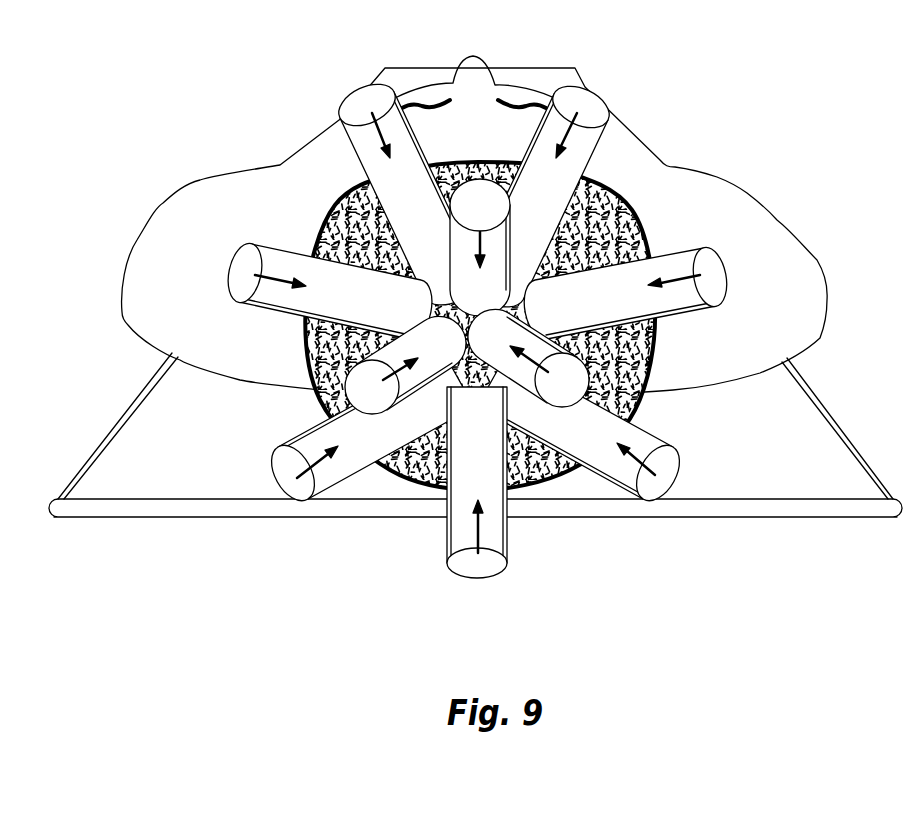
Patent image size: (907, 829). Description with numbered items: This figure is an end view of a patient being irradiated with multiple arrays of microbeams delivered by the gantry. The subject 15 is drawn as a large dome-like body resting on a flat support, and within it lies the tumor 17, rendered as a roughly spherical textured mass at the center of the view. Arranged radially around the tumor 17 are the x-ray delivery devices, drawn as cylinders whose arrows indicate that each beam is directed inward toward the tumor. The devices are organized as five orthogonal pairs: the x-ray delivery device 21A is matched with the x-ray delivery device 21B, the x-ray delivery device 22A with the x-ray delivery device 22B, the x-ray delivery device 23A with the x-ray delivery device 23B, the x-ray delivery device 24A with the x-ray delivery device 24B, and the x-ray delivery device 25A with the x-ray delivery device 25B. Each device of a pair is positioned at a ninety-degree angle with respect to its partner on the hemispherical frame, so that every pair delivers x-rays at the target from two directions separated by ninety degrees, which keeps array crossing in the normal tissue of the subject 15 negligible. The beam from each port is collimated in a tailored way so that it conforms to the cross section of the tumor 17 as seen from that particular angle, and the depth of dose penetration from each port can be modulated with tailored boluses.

The subject 15 is at (660, 156).
The tumor 17 is at (655, 357).
The x-ray delivery device 21A is at (711, 270).
The x-ray delivery device 21B is at (405, 341).
The x-ray delivery device 22A is at (545, 338).
The x-ray delivery device 22B is at (236, 272).
The x-ray delivery device 23A is at (481, 197).
The x-ray delivery device 23B is at (492, 568).
The x-ray delivery device 24A is at (662, 490).
The x-ray delivery device 24B is at (598, 112).
The x-ray delivery device 25A is at (356, 108).
The x-ray delivery device 25B is at (300, 490).